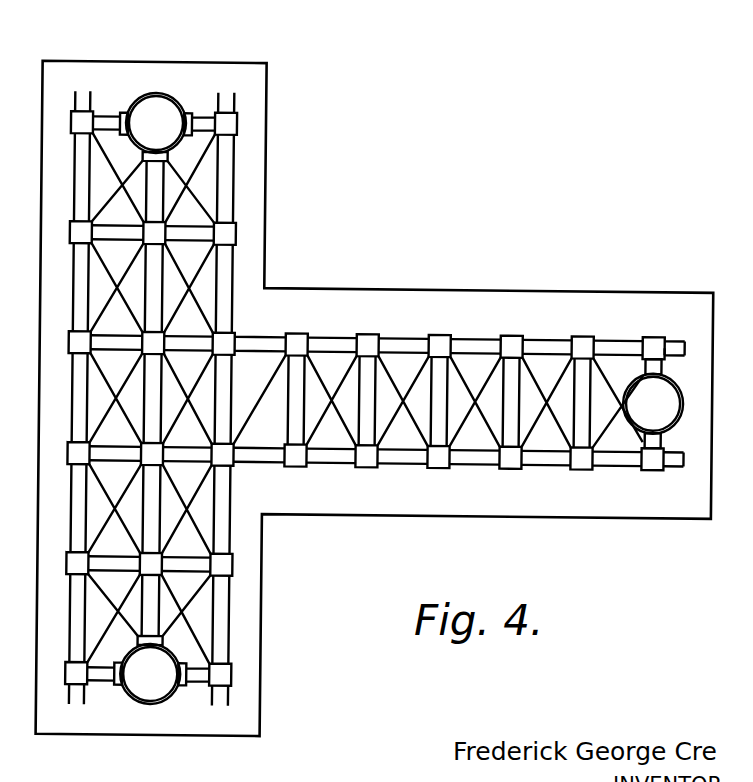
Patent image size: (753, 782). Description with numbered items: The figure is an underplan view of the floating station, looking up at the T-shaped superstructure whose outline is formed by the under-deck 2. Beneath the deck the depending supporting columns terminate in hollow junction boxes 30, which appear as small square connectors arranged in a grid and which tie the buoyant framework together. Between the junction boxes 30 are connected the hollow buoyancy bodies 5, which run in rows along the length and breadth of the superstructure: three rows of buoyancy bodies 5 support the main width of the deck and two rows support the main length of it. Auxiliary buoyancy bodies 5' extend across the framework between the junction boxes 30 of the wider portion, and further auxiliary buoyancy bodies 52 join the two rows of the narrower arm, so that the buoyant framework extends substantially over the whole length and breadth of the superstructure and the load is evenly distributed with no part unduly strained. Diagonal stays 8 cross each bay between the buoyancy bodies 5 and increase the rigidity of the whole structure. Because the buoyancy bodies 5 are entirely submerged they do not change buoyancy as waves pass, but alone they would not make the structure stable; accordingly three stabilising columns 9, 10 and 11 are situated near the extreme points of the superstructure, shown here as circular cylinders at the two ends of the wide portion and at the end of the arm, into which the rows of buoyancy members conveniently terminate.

The under-deck 2 is at (501, 307).
The buoyancy bodies 5 is at (348, 400).
The auxiliary buoyancy bodies 5' is at (206, 362).
The auxiliary buoyancy bodies 52 is at (297, 385).
The stays 8 is at (115, 512).
The hollow junction boxes 30 is at (234, 124).
The stabilising column 10 is at (160, 93).
The stabilising column 9 is at (148, 703).
The stabilising column 11 is at (686, 403).